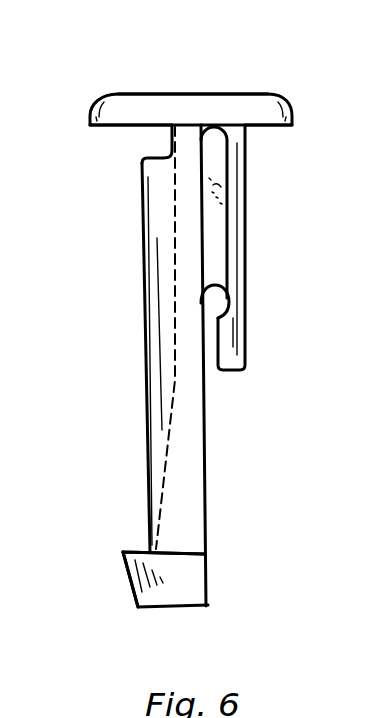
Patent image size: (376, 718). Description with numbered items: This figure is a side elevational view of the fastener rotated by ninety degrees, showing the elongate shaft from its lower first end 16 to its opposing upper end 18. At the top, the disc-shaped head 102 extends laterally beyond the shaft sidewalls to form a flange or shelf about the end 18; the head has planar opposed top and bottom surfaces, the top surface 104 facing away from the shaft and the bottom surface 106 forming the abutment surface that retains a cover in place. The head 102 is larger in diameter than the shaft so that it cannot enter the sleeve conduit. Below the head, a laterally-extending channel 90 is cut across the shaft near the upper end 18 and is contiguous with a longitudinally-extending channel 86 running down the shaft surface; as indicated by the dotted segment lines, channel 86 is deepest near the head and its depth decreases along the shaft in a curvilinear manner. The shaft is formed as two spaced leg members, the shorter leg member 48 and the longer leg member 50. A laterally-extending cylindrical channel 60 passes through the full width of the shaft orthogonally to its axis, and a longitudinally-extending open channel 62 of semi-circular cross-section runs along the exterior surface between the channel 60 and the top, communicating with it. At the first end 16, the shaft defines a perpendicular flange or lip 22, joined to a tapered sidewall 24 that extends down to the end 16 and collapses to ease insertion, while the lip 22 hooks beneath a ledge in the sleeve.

The first end 16 is at (172, 610).
The opposing end 18 is at (265, 127).
The flange 22 is at (137, 549).
The tapered sidewall 24 is at (130, 585).
The leg member 48 is at (247, 349).
The leg member 50 is at (207, 503).
The cylindrical channel 60 is at (220, 302).
The open channel 62 is at (220, 232).
The longitudinally-extending channel 86 is at (162, 453).
The laterally-extending channel 90 is at (157, 150).
The head 102 is at (287, 94).
The top surface 104 is at (142, 93).
The bottom surface 106 is at (93, 127).